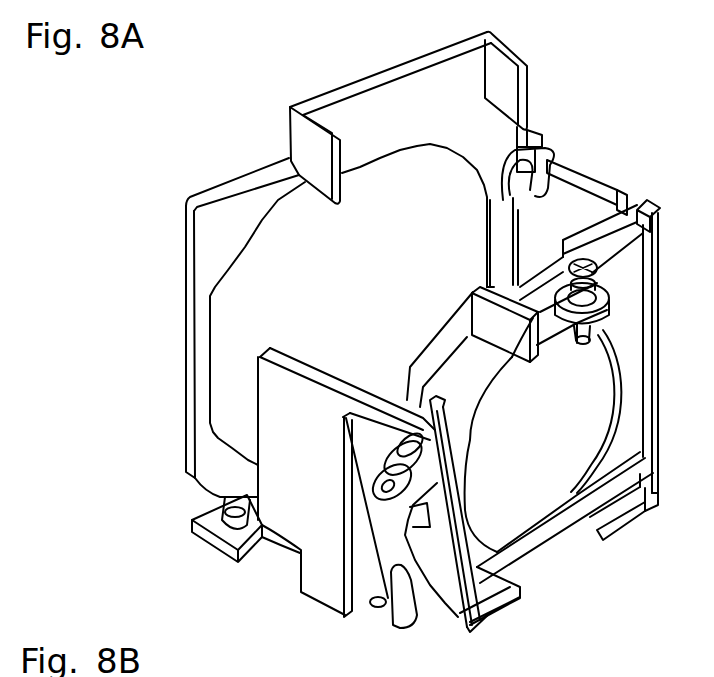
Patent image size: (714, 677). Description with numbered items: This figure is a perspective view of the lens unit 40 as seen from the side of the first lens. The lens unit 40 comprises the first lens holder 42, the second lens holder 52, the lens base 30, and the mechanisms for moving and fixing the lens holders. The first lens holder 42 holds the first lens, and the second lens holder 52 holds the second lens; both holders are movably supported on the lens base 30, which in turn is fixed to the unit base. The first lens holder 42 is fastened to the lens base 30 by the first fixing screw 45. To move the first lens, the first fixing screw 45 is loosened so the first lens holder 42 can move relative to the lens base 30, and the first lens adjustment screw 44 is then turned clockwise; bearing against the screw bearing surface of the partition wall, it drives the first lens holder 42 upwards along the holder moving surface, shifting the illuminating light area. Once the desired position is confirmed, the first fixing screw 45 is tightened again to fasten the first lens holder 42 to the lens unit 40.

The lens unit 40 is at (231, 97).
The second lens holder 52 is at (187, 217).
The lens base 30 is at (270, 375).
The first lens adjustment screw 44 is at (570, 255).
The first lens holder 42 is at (552, 540).
The first fixing screw 45 is at (450, 595).